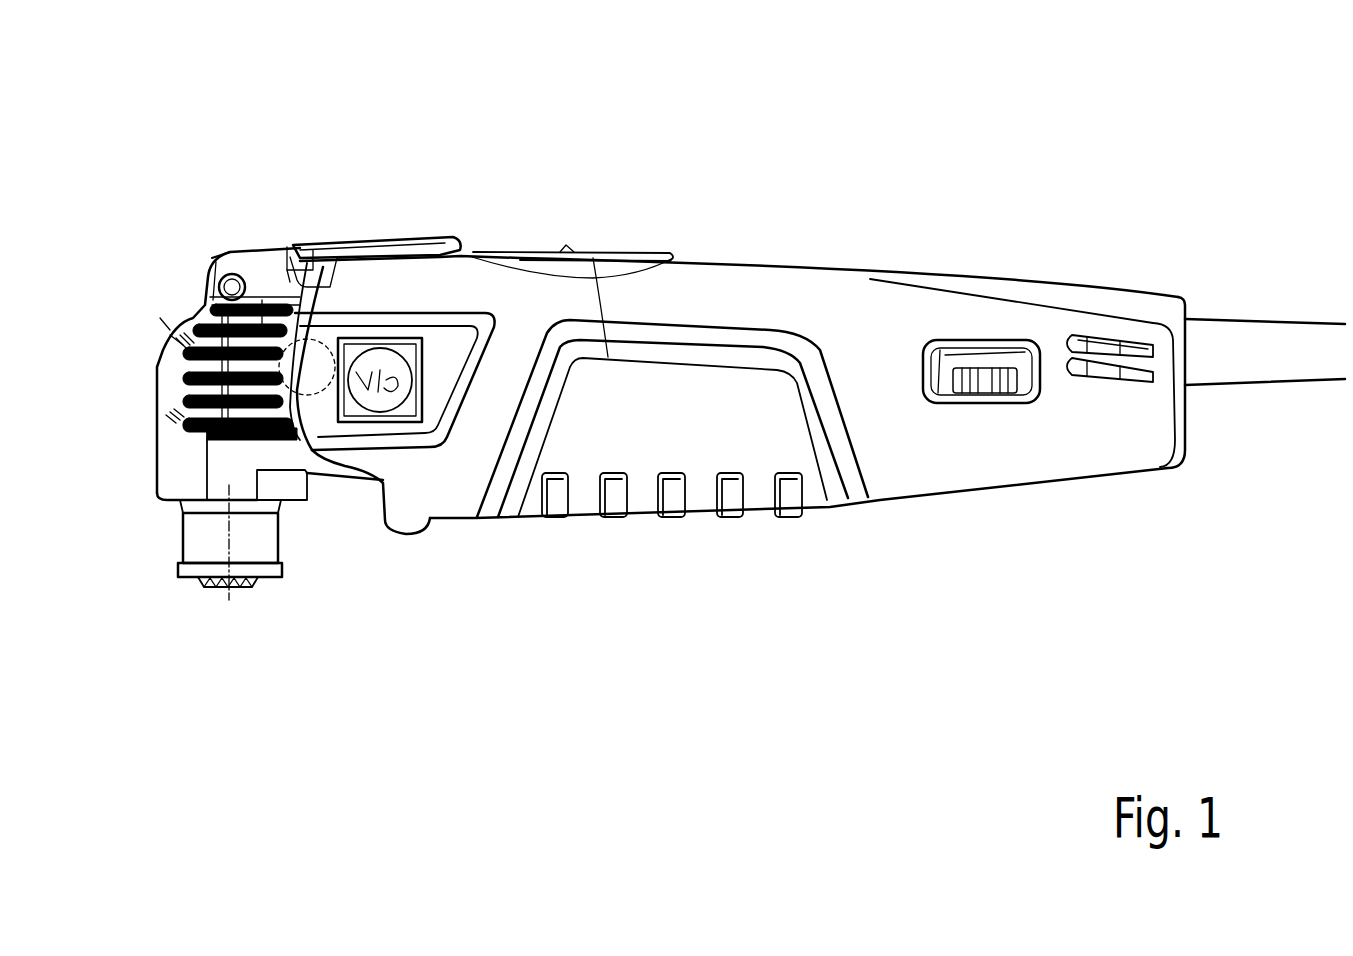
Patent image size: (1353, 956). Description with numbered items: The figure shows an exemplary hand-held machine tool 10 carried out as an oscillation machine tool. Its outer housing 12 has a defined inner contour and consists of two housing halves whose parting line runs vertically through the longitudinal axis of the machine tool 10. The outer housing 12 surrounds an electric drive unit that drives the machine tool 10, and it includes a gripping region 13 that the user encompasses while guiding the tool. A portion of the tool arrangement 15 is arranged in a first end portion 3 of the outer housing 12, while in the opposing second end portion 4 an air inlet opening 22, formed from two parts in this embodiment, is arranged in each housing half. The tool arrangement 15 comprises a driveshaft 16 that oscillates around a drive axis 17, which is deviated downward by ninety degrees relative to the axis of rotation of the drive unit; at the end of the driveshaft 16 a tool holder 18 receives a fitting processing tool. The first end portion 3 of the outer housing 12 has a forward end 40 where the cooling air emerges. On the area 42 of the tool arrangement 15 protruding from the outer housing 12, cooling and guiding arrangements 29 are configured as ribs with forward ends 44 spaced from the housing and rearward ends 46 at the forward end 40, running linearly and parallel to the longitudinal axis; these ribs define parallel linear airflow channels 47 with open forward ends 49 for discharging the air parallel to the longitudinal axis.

The hand-held machine tool 10 is at (810, 143).
The outer housing 12 is at (906, 312).
The gripping region 13 is at (740, 385).
The first end portion 3 is at (397, 297).
The tool arrangement 15 is at (170, 382).
The cooling and guiding arrangements 29 is at (183, 403).
The driveshaft 16 is at (193, 541).
The drive axis 17 is at (228, 604).
The tool holder 18 is at (265, 590).
The second end portion 4 is at (1118, 498).
The air inlet opening 22 is at (1180, 403).
The area 42 is at (217, 257).
The airflow channels 47 is at (280, 327).
The forward end 40 is at (287, 240).
The forward ends 44 is at (163, 323).
The open forward ends 49 is at (173, 332).
The rearward ends 46 is at (307, 367).